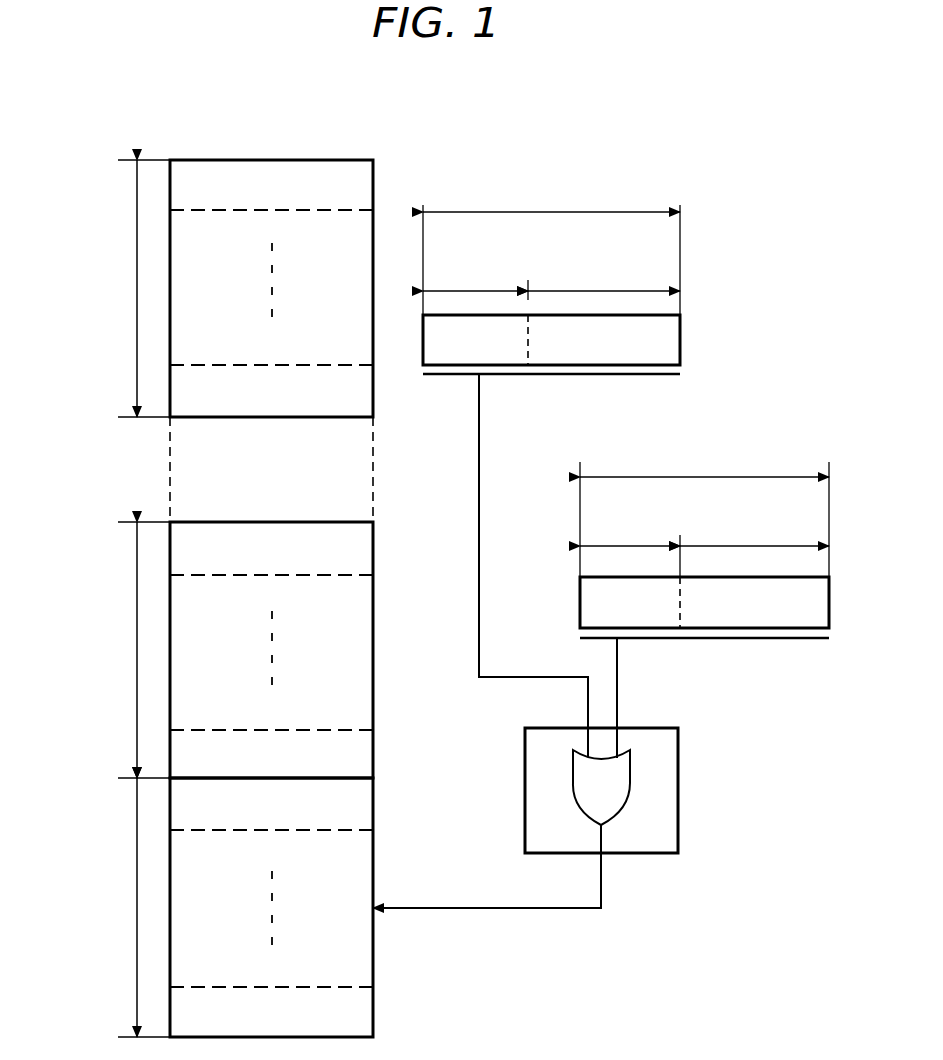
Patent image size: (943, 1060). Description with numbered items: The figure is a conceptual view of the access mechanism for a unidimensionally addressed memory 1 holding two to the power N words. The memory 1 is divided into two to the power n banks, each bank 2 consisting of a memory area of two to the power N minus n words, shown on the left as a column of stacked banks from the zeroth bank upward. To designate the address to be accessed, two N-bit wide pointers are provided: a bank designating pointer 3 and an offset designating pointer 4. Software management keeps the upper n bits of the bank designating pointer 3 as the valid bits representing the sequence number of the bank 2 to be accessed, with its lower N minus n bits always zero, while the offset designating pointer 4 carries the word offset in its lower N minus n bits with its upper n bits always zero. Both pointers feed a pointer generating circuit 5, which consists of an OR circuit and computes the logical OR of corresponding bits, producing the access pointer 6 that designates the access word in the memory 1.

The memory 1 is at (373, 168).
The bank 2 is at (373, 297).
The bank designating pointer 3 is at (680, 325).
The offset designating pointer 4 is at (750, 632).
The pointer generating circuit 5 is at (678, 808).
The access pointer 6 is at (601, 895).